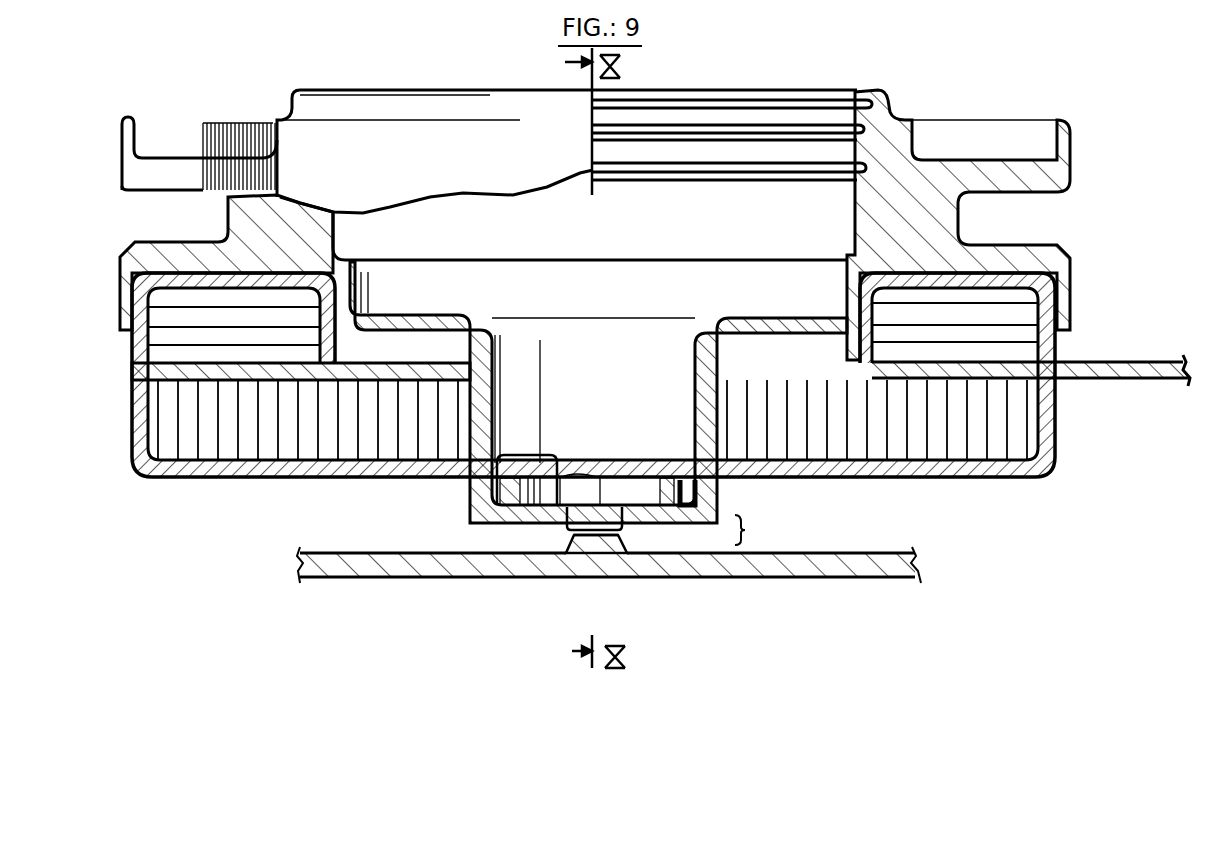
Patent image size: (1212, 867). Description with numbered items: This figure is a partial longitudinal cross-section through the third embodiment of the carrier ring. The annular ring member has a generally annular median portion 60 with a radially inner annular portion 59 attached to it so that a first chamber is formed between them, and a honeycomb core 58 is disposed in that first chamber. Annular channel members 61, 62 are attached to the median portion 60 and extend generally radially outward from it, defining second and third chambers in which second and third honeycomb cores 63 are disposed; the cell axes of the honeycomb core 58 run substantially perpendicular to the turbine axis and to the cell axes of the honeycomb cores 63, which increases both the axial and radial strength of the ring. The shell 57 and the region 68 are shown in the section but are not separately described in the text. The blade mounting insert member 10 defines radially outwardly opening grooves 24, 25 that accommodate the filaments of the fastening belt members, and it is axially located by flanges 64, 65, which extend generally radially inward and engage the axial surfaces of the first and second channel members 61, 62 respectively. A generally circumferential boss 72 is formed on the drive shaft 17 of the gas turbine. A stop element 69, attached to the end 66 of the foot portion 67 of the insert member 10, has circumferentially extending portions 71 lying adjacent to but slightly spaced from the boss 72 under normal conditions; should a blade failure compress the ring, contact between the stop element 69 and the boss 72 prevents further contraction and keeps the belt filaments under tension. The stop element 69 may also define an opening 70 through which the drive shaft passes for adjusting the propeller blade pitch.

The blade mounting insert member 10 is at (888, 155).
The drive shaft 17 is at (824, 566).
The radially outwardly opening groove 24 is at (160, 150).
The radially outwardly opening groove 25 is at (990, 137).
The housing 57 is at (203, 483).
The honeycomb core 58 is at (437, 408).
The radially inner annular portion 59 is at (322, 478).
The annular median portion 60 is at (404, 362).
The annular channel member 61 is at (177, 268).
The annular channel member 62 is at (997, 282).
The honeycomb core 63 is at (353, 273).
The flange 64 is at (137, 262).
The flange 65 is at (1058, 273).
The end of foot portion 66 is at (698, 495).
The foot portion 67 is at (500, 465).
The gap 68 is at (752, 531).
The stop element 69 is at (557, 503).
The opening 70 is at (605, 500).
The circumferentially extending portion 71 is at (583, 517).
The circumferential boss 72 is at (610, 546).